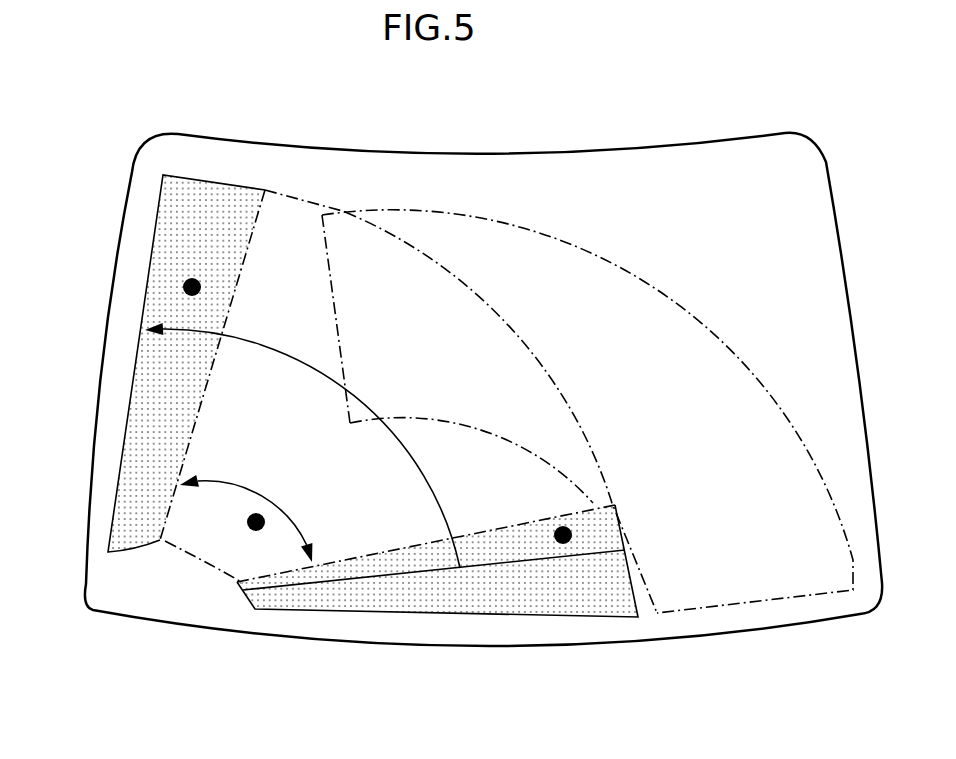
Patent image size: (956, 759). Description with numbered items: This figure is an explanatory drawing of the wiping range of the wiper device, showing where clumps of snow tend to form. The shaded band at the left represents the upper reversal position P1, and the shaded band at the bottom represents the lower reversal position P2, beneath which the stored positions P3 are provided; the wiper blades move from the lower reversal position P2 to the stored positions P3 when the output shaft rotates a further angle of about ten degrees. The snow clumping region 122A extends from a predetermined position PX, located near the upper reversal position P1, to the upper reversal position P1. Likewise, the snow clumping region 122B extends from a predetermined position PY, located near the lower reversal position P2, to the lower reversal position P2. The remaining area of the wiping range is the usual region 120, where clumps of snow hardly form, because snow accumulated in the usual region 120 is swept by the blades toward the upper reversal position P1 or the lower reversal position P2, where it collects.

The upper reversal position P1 is at (158, 212).
The snow clumping region 122A is at (186, 281).
The predetermined position PX is at (255, 230).
The lower reversal position P2 is at (428, 572).
The stored position P3 is at (482, 613).
The predetermined position PY is at (380, 556).
The usual region 120 is at (247, 520).
The snow clumping region 122B is at (571, 541).